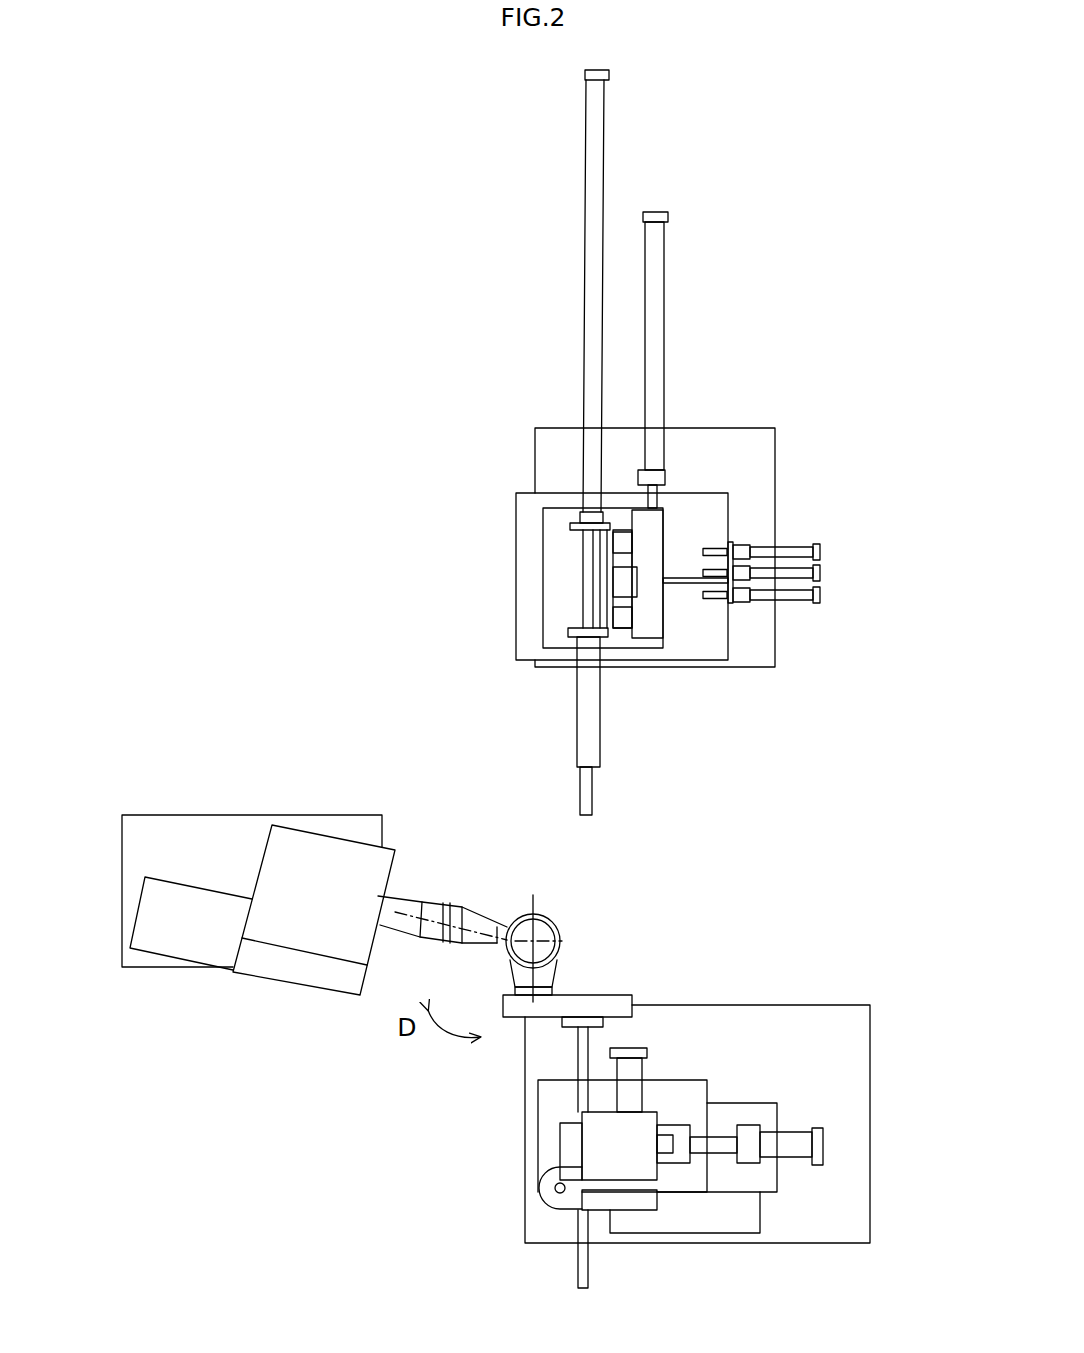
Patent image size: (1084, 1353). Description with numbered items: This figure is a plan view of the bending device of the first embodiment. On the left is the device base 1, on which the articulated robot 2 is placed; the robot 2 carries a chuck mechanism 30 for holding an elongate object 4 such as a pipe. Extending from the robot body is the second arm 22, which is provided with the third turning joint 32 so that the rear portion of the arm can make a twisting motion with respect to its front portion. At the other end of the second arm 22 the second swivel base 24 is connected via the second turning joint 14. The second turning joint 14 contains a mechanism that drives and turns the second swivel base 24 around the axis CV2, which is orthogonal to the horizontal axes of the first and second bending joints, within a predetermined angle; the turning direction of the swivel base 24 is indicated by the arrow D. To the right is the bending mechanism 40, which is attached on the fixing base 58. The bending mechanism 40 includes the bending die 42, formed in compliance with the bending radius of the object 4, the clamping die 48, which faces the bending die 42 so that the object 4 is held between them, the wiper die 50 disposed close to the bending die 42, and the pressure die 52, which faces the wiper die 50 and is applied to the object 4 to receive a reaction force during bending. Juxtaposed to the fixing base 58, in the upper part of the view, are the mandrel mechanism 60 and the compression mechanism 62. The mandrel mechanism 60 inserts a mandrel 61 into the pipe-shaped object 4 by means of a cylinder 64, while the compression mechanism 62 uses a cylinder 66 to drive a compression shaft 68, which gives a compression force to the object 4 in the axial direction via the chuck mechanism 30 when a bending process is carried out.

The device base 1 is at (178, 822).
The articulated robot 2 is at (262, 803).
The elongate object 4 is at (582, 1268).
The second turning joint 14 is at (570, 982).
The second arm 22 is at (405, 907).
The second swivel base 24 is at (561, 941).
The chuck mechanism 30 is at (577, 1053).
The third turning joint 32 is at (474, 901).
The bending mechanism 40 is at (508, 1170).
The bending die 42 is at (550, 1195).
The clamping die 48 is at (633, 1200).
The wiper die 50 is at (572, 1148).
The pressure die 52 is at (645, 1127).
The fixing base 58 is at (803, 1028).
The mandrel mechanism 60 is at (500, 500).
The mandrel 61 is at (587, 798).
The compression mechanism 62 is at (708, 420).
The cylinder 64 is at (595, 315).
The cylinder 66 is at (652, 315).
The compression shaft 68 is at (588, 733).
The axis CV2 is at (552, 912).